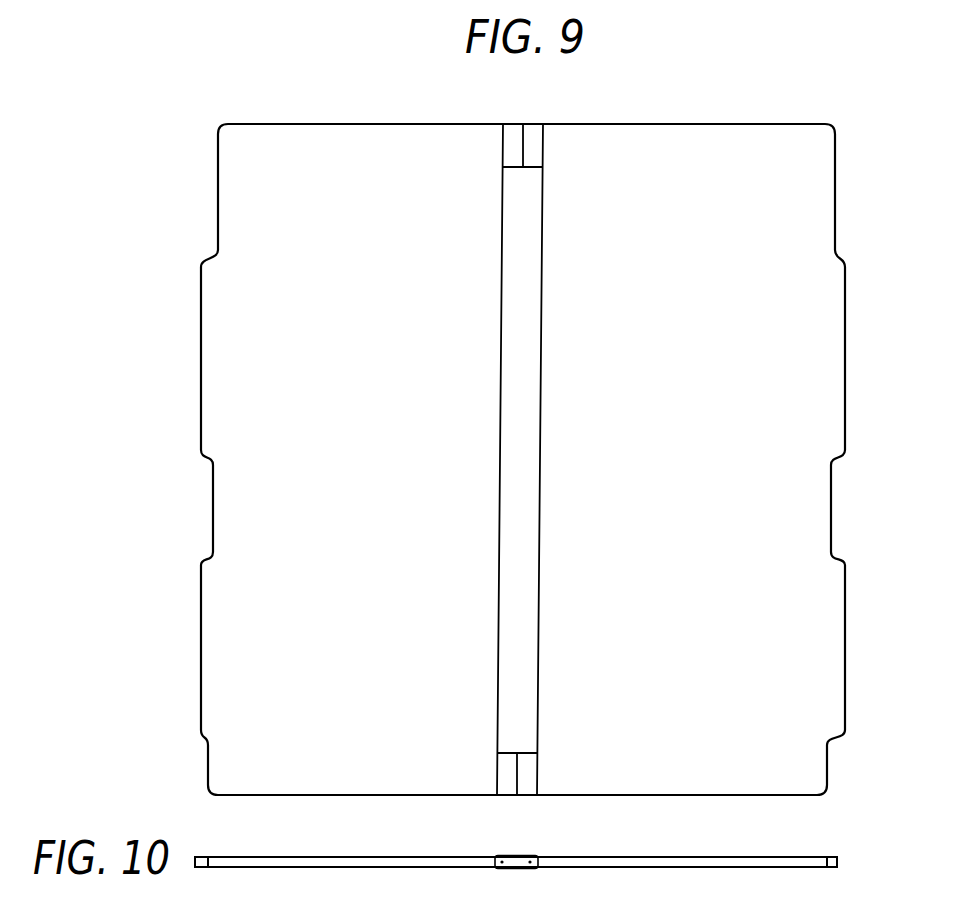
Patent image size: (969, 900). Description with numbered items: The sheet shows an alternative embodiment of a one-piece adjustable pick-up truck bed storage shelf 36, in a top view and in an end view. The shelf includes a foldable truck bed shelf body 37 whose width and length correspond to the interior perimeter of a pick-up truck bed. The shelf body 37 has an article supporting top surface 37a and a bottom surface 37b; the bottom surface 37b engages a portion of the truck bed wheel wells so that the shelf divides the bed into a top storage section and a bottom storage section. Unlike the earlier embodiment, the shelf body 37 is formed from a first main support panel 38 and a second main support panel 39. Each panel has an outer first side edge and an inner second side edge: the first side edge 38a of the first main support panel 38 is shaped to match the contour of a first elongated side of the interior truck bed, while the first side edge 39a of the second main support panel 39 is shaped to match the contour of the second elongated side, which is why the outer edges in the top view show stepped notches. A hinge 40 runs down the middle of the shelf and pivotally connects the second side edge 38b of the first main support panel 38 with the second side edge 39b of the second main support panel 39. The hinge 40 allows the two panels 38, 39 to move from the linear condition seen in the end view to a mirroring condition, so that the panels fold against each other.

In FIG. 9, the one-piece adjustable pick-up truck bed storage shelf 36 is at (834, 98).
In FIG. 9, the foldable truck bed shelf body 37 is at (167, 634).
In FIG. 10, the foldable truck bed shelf body 37 is at (516, 862).
In FIG. 10, the article supporting top surface 37a is at (788, 857).
In FIG. 10, the bottom surface 37b is at (777, 867).
In FIG. 9, the first main support panel 38 is at (282, 153).
In FIG. 10, the first main support panel 38 is at (297, 863).
In FIG. 9, the first side edge of first main support panel 38a is at (200, 354).
In FIG. 9, the second side edge of first main support panel 38b is at (500, 537).
In FIG. 9, the second main support panel 39 is at (738, 148).
In FIG. 10, the second main support panel 39 is at (628, 858).
In FIG. 9, the first side edge of second main support panel 39a is at (843, 383).
In FIG. 9, the second side edge of second main support panel 39b is at (540, 543).
In FIG. 9, the hinge 40 is at (535, 114).
In FIG. 10, the hinge 40 is at (516, 862).